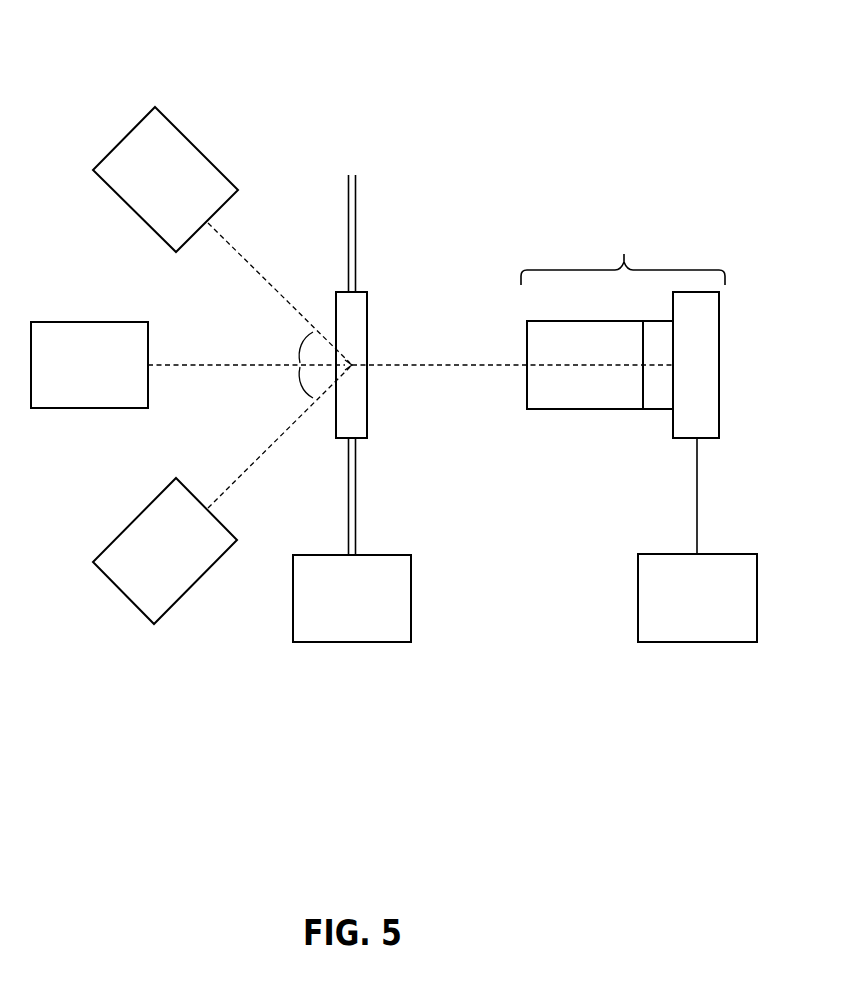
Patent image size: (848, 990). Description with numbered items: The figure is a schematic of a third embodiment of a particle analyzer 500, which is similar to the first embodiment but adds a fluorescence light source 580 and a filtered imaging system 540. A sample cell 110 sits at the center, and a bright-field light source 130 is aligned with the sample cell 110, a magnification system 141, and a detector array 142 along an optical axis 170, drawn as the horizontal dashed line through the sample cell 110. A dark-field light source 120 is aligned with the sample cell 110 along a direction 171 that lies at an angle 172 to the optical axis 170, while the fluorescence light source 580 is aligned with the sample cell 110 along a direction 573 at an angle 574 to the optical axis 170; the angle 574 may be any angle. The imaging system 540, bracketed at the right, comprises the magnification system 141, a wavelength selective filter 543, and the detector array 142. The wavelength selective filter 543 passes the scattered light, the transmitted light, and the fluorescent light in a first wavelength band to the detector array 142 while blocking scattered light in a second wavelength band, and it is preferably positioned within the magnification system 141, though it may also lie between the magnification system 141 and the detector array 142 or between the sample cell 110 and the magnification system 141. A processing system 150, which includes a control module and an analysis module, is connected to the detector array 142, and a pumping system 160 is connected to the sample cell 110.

The particle analyzer 500 is at (68, 80).
The fluorescence light source 580 is at (165, 179).
The direction 573 is at (251, 265).
The bright-field light source 130 is at (89, 365).
The optical axis 170 is at (211, 366).
The angle 574 is at (285, 347).
The angle 172 is at (285, 387).
The direction 171 is at (252, 466).
The dark-field light source 120 is at (165, 551).
The sample cell 110 is at (336, 316).
The pumping system 160 is at (352, 408).
The imaging system 540 is at (623, 335).
The magnification system 141 is at (585, 365).
The wavelength selective filter 543 is at (659, 321).
The detector array 142 is at (696, 365).
The processing system 150 is at (697, 540).